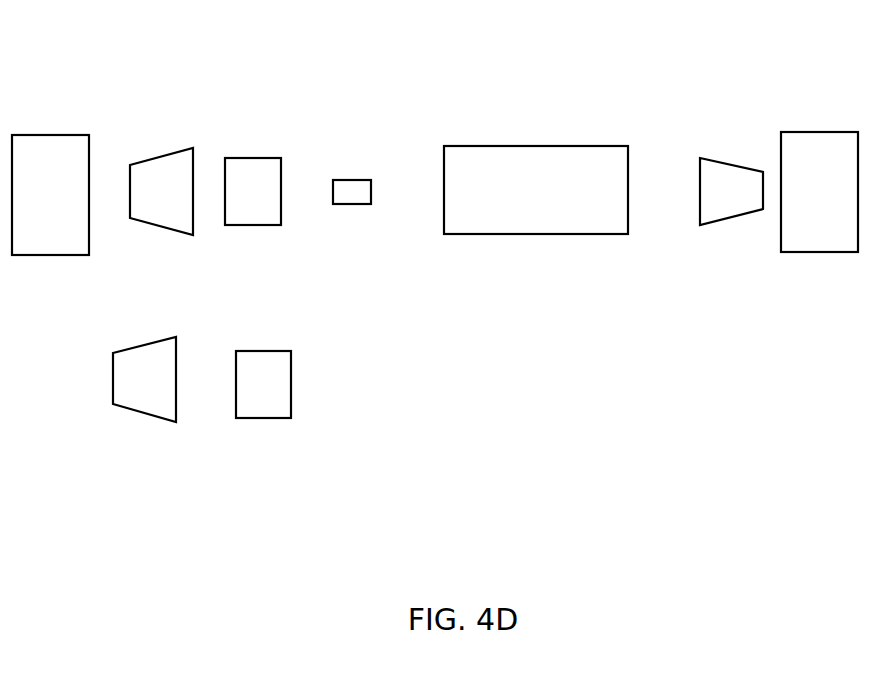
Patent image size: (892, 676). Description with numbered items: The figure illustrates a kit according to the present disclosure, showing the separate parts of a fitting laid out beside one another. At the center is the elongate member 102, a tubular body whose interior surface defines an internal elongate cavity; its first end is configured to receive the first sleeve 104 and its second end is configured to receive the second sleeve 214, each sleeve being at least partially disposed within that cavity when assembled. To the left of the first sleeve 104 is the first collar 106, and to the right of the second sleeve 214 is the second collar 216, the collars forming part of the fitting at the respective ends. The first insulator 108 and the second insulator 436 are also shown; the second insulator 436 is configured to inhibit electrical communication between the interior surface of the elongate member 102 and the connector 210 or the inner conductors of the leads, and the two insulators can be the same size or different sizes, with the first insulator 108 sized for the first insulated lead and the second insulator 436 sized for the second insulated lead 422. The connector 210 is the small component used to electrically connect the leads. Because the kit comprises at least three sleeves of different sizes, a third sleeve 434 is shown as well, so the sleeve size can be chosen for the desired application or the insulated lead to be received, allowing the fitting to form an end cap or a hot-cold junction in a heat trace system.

The elongate member 102 is at (507, 170).
The first sleeve 104 is at (173, 173).
The first collar 106 is at (102, 142).
The first insulator 108 is at (257, 173).
The connector 210 is at (356, 188).
The second sleeve 214 is at (727, 175).
The second collar 216 is at (817, 147).
The second insulated lead 422 is at (668, 177).
The third sleeve 434 is at (155, 362).
The second insulator 436 is at (268, 365).